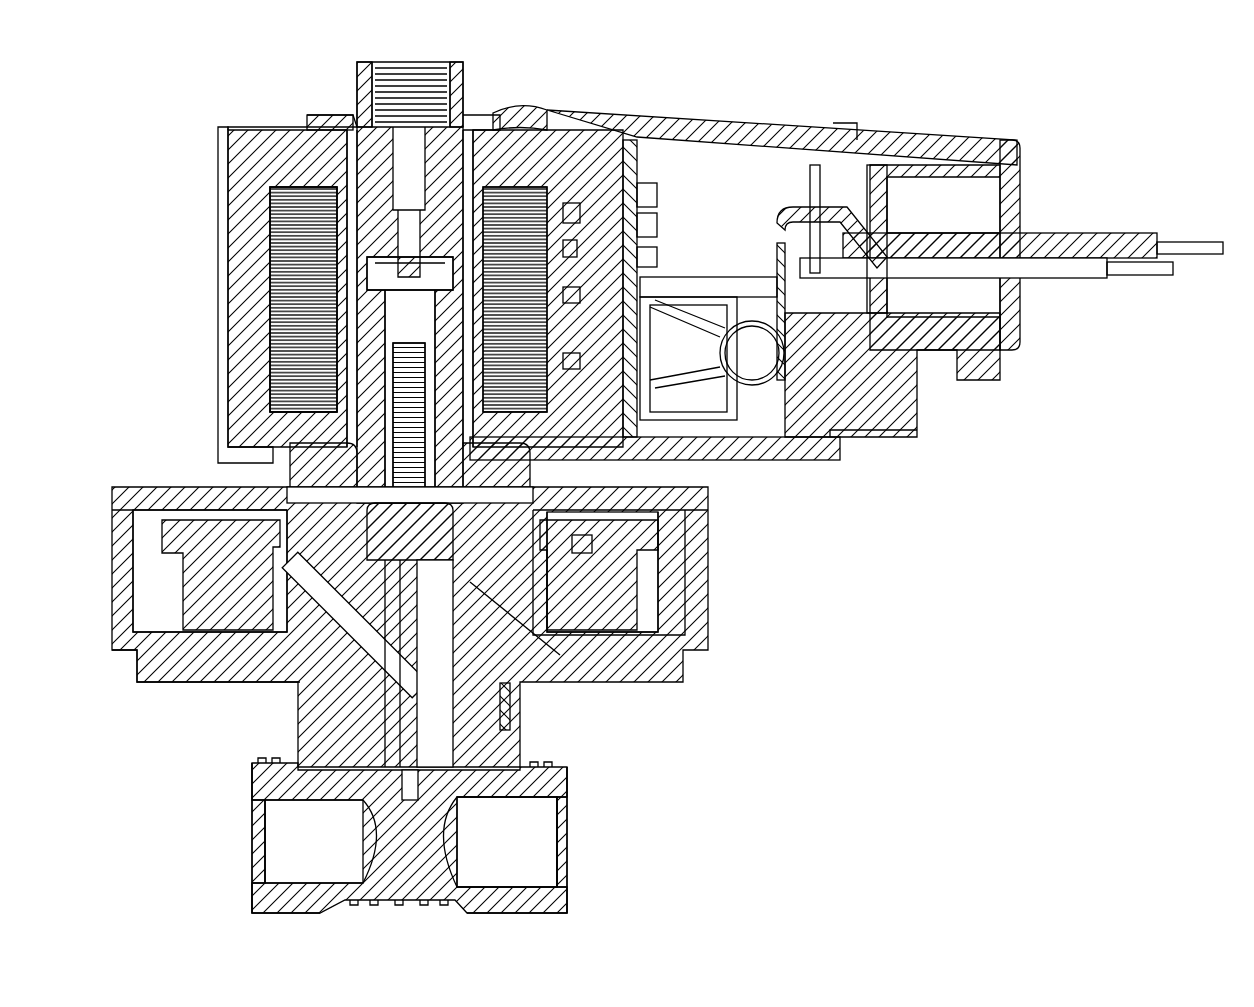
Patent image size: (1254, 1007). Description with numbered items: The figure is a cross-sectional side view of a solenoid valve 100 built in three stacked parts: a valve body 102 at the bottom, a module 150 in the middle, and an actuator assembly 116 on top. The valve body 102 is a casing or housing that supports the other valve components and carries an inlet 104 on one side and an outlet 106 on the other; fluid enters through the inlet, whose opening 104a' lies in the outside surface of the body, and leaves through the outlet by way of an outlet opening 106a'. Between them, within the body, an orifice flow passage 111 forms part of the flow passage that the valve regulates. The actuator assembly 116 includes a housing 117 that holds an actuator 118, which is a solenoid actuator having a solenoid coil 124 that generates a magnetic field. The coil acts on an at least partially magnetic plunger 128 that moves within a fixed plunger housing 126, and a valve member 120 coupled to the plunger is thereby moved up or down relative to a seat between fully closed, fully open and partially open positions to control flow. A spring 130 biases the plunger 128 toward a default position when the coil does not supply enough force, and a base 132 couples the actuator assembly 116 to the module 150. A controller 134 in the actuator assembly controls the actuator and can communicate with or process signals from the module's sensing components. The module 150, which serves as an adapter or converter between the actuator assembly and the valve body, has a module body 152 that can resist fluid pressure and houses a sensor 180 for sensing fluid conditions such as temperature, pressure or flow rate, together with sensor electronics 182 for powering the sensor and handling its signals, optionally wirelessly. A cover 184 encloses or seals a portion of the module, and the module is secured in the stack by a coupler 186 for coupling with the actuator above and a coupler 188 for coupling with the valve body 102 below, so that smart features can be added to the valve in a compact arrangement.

The solenoid valve 100 is at (668, 488).
The valve body 102 is at (411, 850).
The inlet 104 is at (285, 915).
The inlet opening in outside surface 104a' is at (211, 844).
The outlet 106 is at (505, 908).
The outlet opening 106a' is at (610, 846).
The orifice flow passage 111 is at (460, 815).
The actuator assembly 116 is at (380, 269).
The housing 117 is at (885, 256).
The actuator 118 is at (458, 62).
The valve member 120 is at (463, 545).
The solenoid coil 124 is at (560, 165).
The plunger housing 126 is at (320, 185).
The plunger 128 is at (270, 345).
The spring 130 is at (218, 388).
The base 132 is at (317, 473).
The controller 134 is at (665, 145).
The module 150 is at (454, 615).
The module body 152 is at (205, 685).
The sensor 180 is at (640, 605).
The sensor electronics 182 is at (660, 540).
The cover 184 is at (688, 487).
The coupler for coupling with an actuator 186 is at (500, 488).
The coupler for coupling with a valve body 188 is at (510, 700).